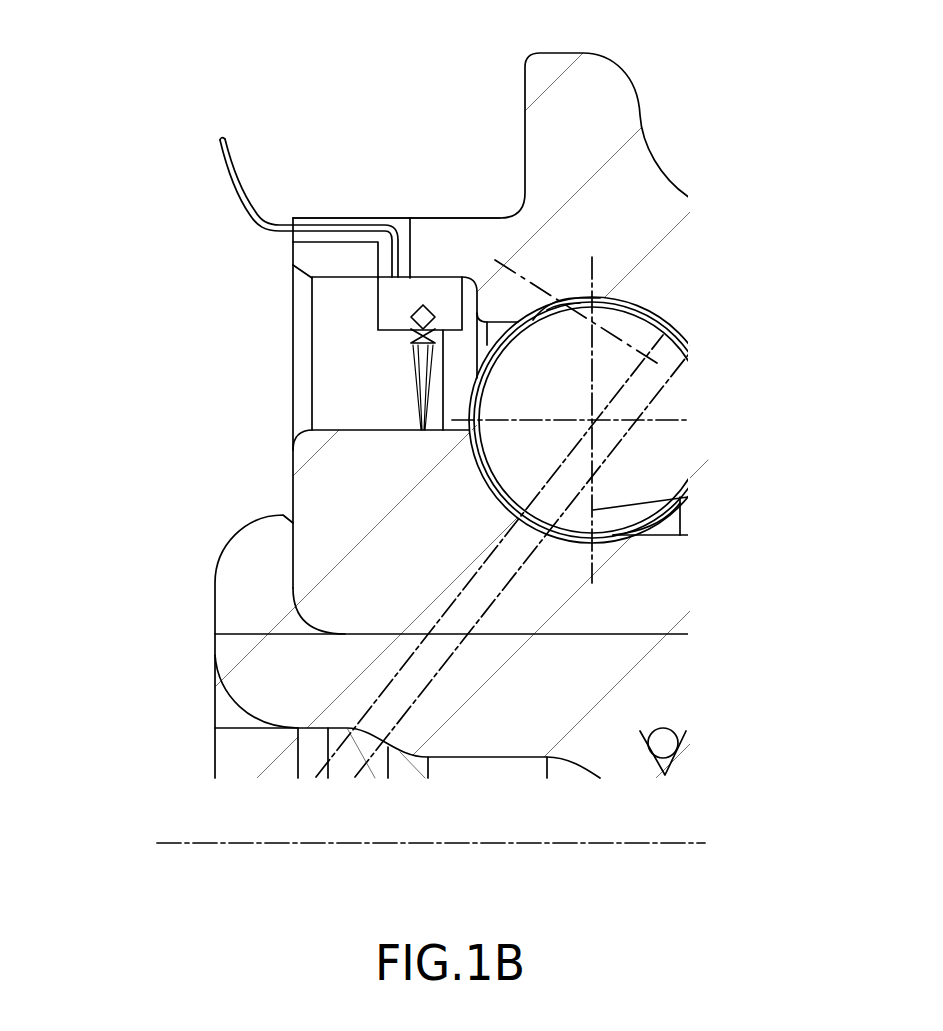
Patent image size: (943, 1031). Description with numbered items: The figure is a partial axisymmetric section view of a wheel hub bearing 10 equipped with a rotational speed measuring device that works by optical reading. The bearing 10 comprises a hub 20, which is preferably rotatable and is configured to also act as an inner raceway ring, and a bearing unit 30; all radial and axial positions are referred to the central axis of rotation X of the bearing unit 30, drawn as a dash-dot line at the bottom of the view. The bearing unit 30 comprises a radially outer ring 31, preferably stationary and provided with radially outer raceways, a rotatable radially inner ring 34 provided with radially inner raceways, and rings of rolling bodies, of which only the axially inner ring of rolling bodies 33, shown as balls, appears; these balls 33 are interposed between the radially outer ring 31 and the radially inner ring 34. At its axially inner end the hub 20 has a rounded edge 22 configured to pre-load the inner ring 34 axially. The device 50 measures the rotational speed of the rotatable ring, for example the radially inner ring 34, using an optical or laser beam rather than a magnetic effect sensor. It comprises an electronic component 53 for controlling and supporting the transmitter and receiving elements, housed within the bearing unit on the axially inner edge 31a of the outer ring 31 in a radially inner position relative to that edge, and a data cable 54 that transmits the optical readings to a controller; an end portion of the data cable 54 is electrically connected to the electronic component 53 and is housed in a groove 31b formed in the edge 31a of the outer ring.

The bearing 10 is at (428, 66).
The hub 20 is at (265, 683).
The rounded edge 22 is at (260, 582).
The bearing unit 30 is at (200, 340).
The radially outer ring 31 is at (617, 193).
The axially inner edge 31a is at (330, 260).
The groove 31b is at (324, 200).
The axially inner ring of rolling bodies 33 is at (605, 340).
The radially inner ring 34 is at (337, 502).
The device for measuring the rotational speed 50 is at (370, 345).
The electronic component 53 is at (437, 293).
The data cable 54 is at (263, 227).
The central axis of rotation X is at (193, 820).